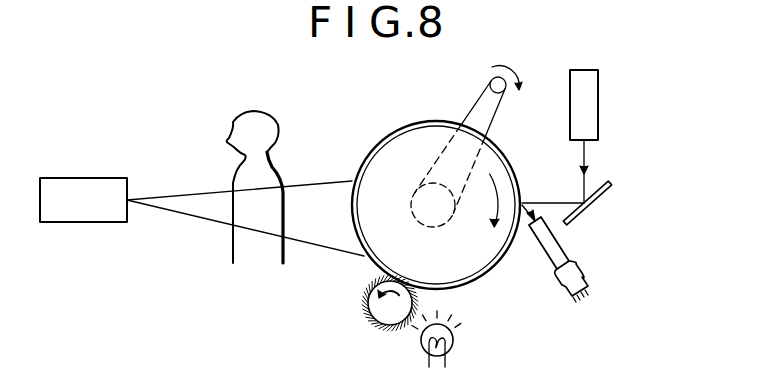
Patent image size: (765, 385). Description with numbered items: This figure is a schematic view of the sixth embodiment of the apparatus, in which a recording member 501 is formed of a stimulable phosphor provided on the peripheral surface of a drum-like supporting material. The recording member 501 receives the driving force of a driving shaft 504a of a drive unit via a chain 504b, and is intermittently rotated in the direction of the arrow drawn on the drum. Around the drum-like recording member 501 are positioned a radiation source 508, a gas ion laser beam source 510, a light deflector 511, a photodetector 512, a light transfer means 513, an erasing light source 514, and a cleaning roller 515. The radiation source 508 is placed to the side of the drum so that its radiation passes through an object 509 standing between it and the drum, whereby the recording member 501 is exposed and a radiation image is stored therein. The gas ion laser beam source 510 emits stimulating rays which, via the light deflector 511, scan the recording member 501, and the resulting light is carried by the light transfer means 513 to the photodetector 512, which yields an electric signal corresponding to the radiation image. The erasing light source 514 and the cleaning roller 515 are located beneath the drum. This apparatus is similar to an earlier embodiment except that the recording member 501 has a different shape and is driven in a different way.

The recording member 501 is at (388, 128).
The driving shaft 504a is at (489, 80).
The chain 504b is at (470, 111).
The radiation source 508 is at (101, 222).
The object 509 is at (279, 133).
The gas ion laser beam source 510 is at (598, 100).
The light deflector 511 is at (607, 189).
The photodetector 512 is at (588, 282).
The light transfer means 513 is at (563, 247).
The erasing light source 514 is at (453, 344).
The cleaning roller 515 is at (367, 313).